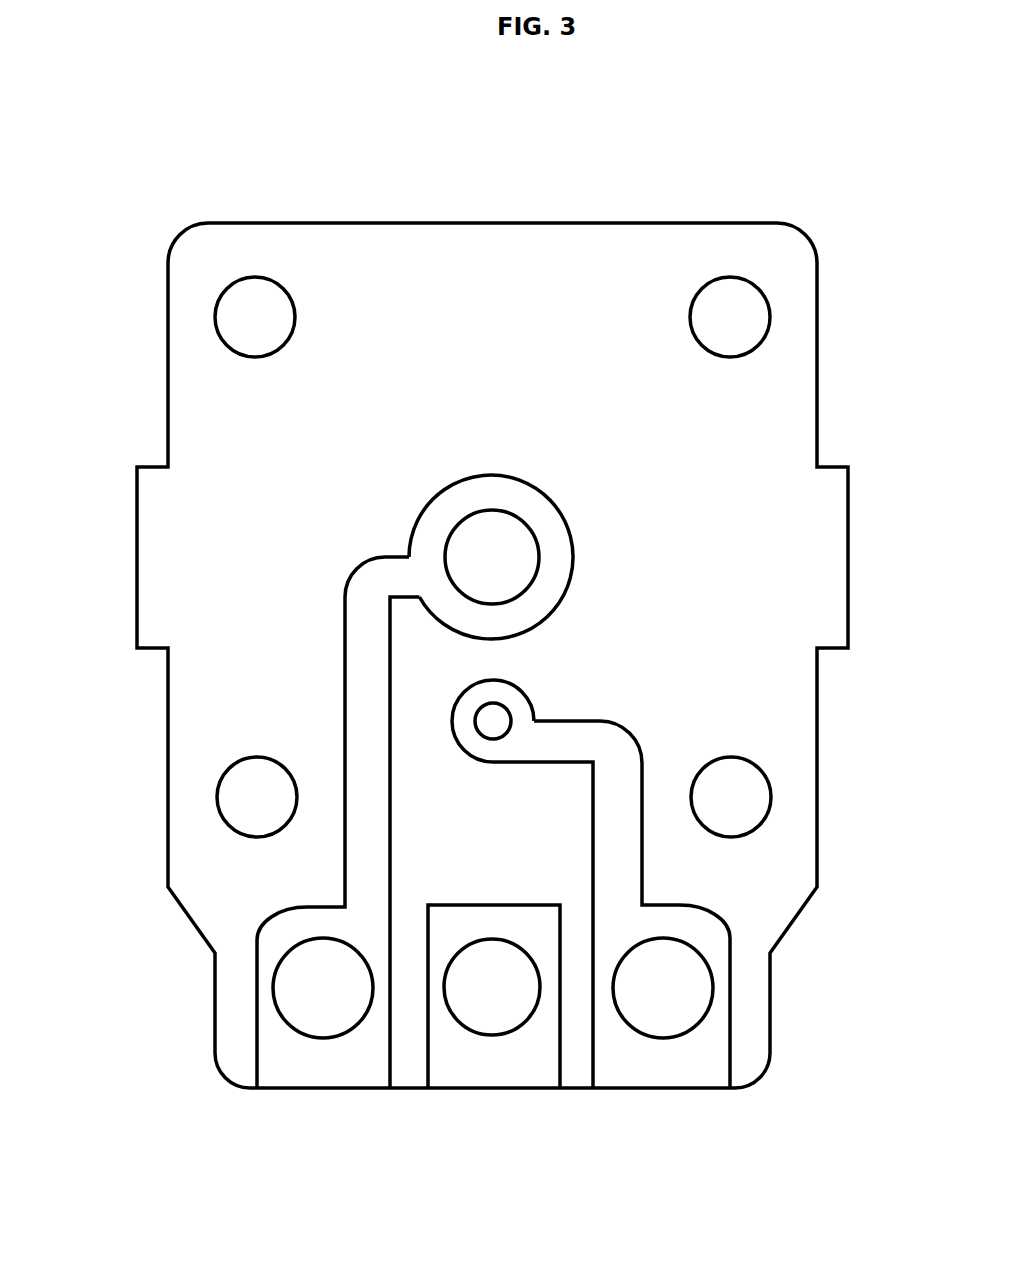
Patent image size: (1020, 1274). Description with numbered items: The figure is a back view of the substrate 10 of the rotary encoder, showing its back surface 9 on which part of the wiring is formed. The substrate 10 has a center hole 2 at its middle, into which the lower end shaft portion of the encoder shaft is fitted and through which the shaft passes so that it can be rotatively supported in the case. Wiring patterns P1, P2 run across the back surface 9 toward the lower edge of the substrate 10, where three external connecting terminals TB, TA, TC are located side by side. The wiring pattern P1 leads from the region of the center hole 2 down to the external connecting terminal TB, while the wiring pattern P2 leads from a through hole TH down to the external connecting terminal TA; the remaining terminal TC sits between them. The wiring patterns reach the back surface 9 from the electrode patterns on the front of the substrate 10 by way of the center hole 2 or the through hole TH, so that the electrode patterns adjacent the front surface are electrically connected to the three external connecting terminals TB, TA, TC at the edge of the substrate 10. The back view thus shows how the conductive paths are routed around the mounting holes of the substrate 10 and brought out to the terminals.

The substrate 10 is at (808, 163).
The back surface 9 is at (340, 262).
The center hole 2 is at (500, 543).
The wiring pattern P1 is at (357, 717).
The wiring pattern P2 is at (627, 850).
The through hole TH is at (490, 717).
The external connecting terminal TB is at (322, 1072).
The external connecting terminal TC is at (500, 1070).
The external connecting terminal TA is at (662, 1070).